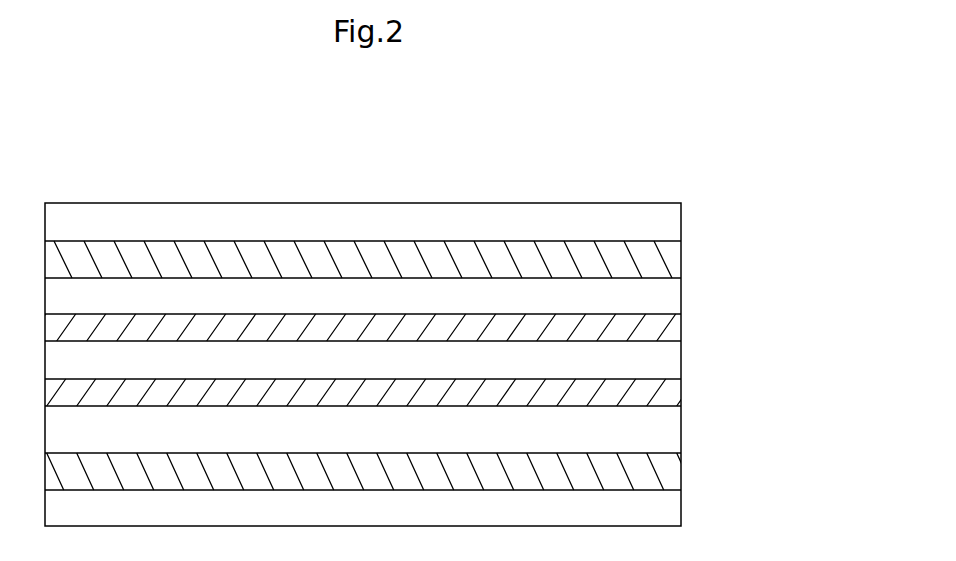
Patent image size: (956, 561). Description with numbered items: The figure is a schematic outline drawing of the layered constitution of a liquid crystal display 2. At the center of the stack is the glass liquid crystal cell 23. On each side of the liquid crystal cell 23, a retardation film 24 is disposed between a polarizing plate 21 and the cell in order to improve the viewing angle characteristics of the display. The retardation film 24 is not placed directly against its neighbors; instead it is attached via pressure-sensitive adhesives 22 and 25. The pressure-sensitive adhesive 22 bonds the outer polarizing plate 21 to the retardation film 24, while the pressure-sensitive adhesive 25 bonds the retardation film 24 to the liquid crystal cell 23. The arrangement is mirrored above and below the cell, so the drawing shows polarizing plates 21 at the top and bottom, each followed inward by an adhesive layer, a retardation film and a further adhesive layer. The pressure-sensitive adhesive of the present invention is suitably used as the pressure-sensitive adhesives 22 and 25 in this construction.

The liquid crystal display 2 is at (580, 170).
The polarizing plate 21 is at (658, 220).
The pressure-sensitive adhesive 22 is at (662, 250).
The liquid crystal cell 23 is at (670, 363).
The retardation film 24 is at (670, 297).
The pressure-sensitive adhesive 25 is at (670, 330).